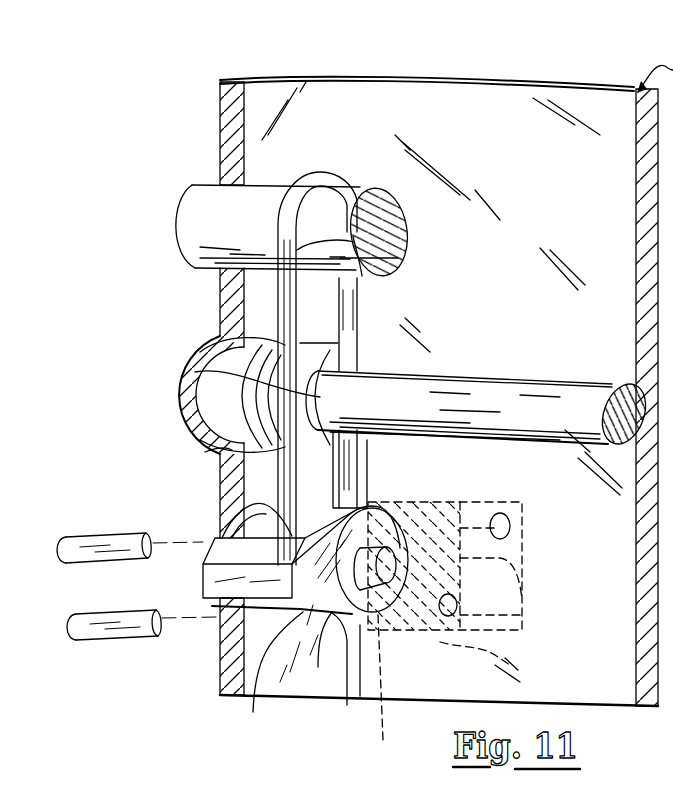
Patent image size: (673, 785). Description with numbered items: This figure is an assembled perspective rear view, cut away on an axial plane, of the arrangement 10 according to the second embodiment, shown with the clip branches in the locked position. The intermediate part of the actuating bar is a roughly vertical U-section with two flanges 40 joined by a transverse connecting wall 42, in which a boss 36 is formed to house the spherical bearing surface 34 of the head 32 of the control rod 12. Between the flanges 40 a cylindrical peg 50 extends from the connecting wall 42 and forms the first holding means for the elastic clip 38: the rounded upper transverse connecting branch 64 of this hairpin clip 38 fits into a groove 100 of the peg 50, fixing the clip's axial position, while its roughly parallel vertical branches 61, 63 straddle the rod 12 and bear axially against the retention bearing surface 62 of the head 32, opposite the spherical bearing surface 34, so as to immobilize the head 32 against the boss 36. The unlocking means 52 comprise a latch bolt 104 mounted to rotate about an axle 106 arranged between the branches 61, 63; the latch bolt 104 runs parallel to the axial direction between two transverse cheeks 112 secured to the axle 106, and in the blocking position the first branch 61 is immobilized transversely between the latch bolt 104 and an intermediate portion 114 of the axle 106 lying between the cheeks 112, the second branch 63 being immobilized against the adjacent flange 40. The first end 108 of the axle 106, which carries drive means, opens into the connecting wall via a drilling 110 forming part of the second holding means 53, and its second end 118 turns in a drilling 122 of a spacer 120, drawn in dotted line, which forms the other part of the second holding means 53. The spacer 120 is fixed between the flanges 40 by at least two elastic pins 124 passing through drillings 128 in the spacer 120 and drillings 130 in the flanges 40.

The arrangement 10 is at (32, 192).
The control rod 12 is at (548, 382).
The head 32 is at (205, 452).
The spherical bearing surface 34 is at (235, 334).
The boss 36 is at (186, 414).
The elastic clip 38 is at (366, 305).
The flanges 40 is at (578, 172).
The connecting wall 42 is at (262, 102).
The cylindrical peg 50 is at (236, 221).
The unlocking means 52 is at (313, 655).
The second holding means 53 is at (489, 498).
The first vertical branch 61 is at (190, 360).
The retention bearing surface 62 is at (385, 342).
The second vertical branch 63 is at (398, 457).
The upper transverse connecting branch 64 is at (314, 176).
The groove 100 is at (398, 258).
The latch bolt 104 is at (225, 666).
The axle 106 is at (398, 595).
The first end 108 is at (200, 568).
The drilling 110 is at (226, 528).
The transverse cheeks 112 is at (200, 590).
The intermediate portion 114 is at (332, 398).
The second end 118 is at (346, 696).
The spacer 120 is at (490, 661).
The drilling 122 is at (372, 515).
The elastic pins 124 is at (93, 540).
The drillings 128 is at (520, 582).
The drillings 130 is at (512, 530).